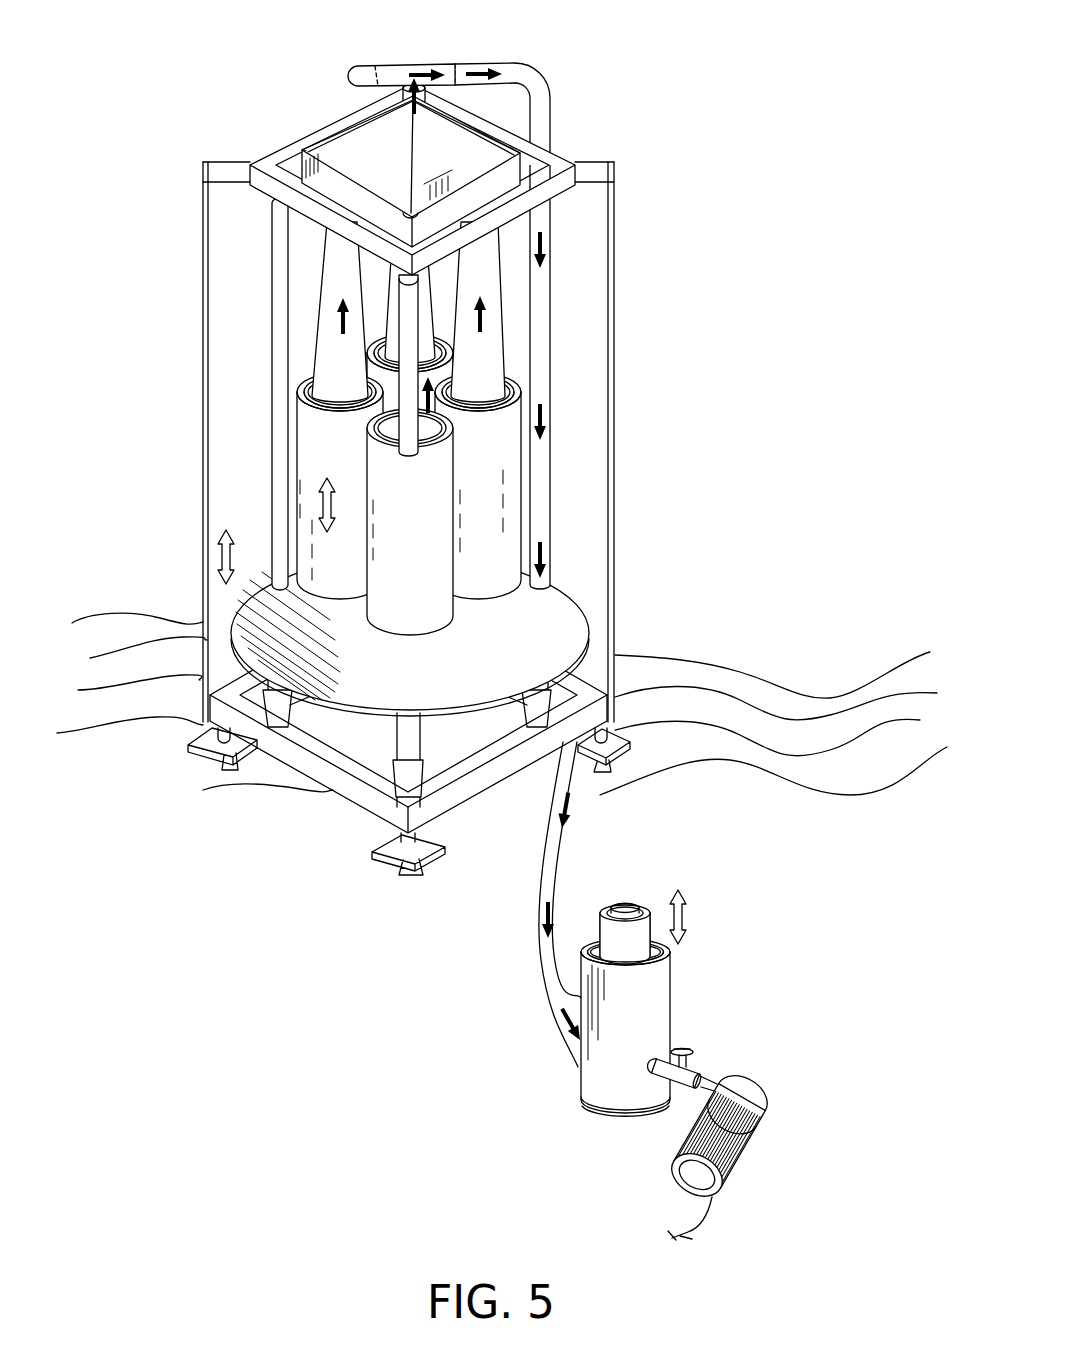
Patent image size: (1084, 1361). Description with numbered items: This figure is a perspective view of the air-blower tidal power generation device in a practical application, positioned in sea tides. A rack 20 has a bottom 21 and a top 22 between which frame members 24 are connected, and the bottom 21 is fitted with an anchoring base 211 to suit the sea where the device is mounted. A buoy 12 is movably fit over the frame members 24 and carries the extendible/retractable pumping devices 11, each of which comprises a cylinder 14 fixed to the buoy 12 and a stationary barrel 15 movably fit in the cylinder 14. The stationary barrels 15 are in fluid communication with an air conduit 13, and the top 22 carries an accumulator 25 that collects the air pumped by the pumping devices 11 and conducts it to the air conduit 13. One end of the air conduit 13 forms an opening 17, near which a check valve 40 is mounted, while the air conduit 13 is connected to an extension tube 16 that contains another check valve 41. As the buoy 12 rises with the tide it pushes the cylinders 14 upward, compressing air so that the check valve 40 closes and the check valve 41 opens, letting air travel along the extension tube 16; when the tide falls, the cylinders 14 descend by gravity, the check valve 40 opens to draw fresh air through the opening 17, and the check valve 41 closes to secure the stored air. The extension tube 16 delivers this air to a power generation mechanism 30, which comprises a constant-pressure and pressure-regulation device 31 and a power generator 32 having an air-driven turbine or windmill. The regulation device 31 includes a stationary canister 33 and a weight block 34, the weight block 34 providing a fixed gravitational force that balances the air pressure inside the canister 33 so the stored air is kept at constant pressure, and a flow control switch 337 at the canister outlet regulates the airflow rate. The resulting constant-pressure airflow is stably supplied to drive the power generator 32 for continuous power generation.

The rack 20 is at (293, 107).
The frame member 24 is at (611, 428).
The top 22 is at (265, 163).
The accumulator 25 is at (480, 162).
The opening 17 is at (358, 84).
The air conduit 13 is at (424, 80).
The check valve 40 is at (368, 66).
The check valve 41 is at (470, 62).
The extension tube 16 is at (543, 122).
The stationary barrel 15 is at (342, 272).
The extendible/retractable pumping device 11 is at (302, 342).
The cylinder 14 is at (338, 468).
The buoy 12 is at (568, 600).
The bottom 21 is at (350, 750).
The anchoring base 211 is at (210, 752).
The power generation mechanism 30 is at (707, 907).
The constant-pressure and pressure-regulation device 31 is at (685, 955).
The canister 33 is at (645, 1023).
The weight block 34 is at (625, 907).
The flow control switch 337 is at (692, 1052).
The power generator 32 is at (732, 1140).